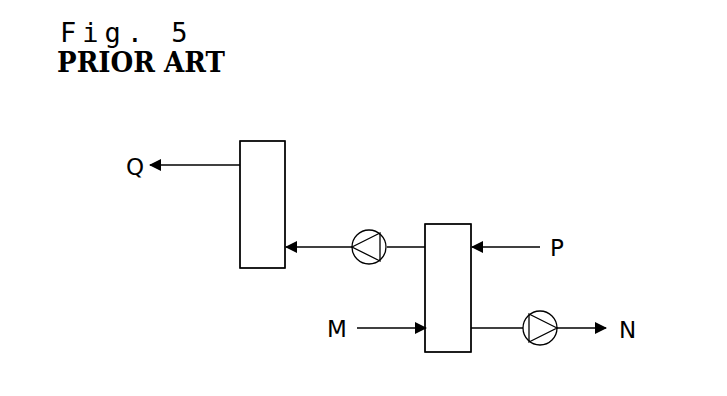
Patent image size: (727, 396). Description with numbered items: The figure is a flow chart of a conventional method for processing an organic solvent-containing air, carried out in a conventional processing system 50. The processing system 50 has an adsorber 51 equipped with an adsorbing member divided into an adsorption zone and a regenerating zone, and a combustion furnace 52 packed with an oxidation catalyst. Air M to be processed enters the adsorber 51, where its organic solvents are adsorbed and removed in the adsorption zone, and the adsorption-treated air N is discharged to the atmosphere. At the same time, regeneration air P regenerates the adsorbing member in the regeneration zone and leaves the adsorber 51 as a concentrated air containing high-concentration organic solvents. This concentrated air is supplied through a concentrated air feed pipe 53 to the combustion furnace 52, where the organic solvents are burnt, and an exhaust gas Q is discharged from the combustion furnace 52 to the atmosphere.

The processing system 50 is at (637, 93).
The adsorber 51 is at (452, 231).
The combustion furnace 52 is at (262, 149).
The concentrated air feed pipe 53 is at (320, 246).